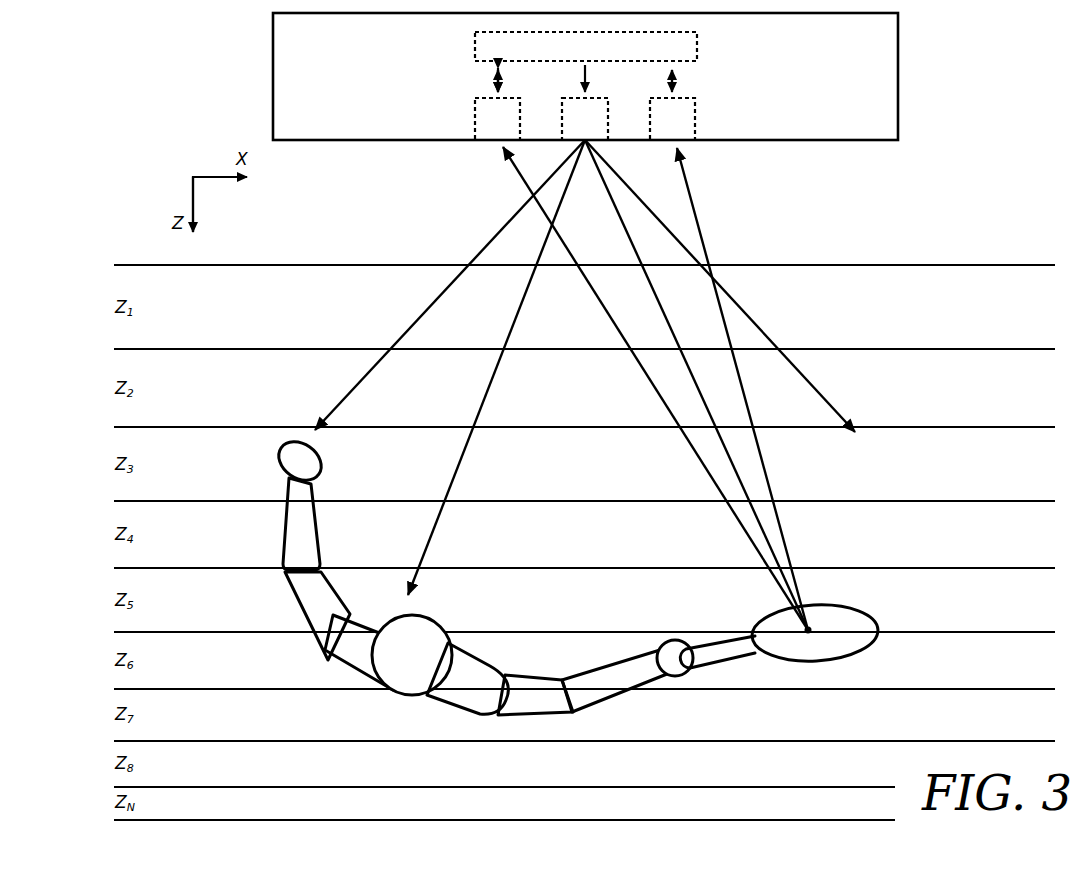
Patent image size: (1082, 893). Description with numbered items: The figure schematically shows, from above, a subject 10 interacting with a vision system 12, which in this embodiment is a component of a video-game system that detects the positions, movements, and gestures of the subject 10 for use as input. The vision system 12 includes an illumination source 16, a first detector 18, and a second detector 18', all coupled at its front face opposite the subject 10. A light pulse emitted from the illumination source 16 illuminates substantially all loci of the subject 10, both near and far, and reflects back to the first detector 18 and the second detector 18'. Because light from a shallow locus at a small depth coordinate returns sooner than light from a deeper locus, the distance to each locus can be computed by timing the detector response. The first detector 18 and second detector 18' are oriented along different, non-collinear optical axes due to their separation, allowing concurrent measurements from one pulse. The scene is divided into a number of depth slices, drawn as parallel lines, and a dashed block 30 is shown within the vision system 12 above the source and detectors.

The subject 10 is at (603, 538).
The vision system 12 is at (898, 78).
The illumination source 16 is at (585, 119).
The first detector 18 is at (497, 119).
The second detector 18' is at (672, 119).
The controller / processor 30 is at (586, 46).